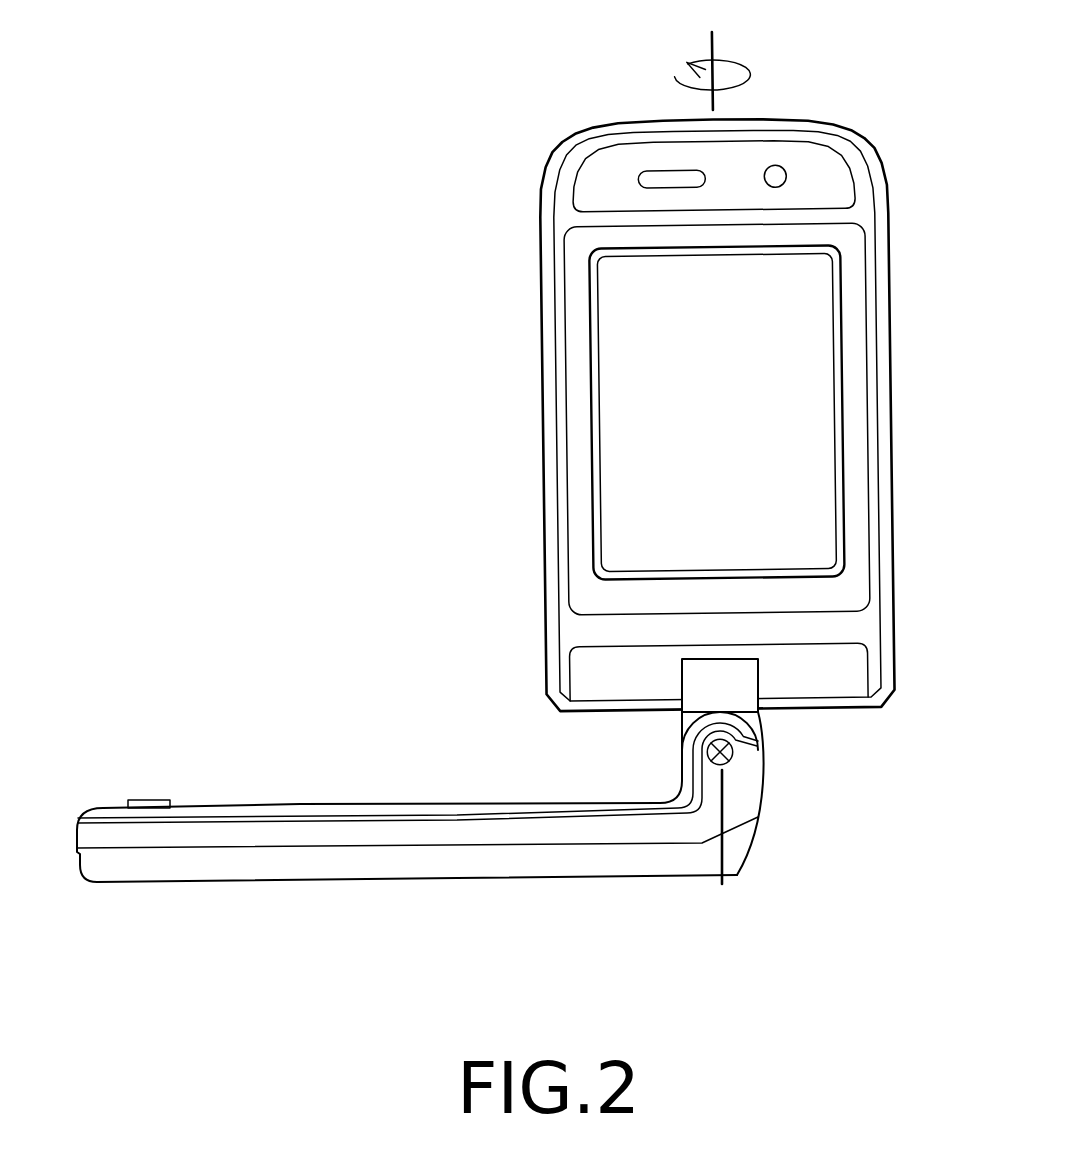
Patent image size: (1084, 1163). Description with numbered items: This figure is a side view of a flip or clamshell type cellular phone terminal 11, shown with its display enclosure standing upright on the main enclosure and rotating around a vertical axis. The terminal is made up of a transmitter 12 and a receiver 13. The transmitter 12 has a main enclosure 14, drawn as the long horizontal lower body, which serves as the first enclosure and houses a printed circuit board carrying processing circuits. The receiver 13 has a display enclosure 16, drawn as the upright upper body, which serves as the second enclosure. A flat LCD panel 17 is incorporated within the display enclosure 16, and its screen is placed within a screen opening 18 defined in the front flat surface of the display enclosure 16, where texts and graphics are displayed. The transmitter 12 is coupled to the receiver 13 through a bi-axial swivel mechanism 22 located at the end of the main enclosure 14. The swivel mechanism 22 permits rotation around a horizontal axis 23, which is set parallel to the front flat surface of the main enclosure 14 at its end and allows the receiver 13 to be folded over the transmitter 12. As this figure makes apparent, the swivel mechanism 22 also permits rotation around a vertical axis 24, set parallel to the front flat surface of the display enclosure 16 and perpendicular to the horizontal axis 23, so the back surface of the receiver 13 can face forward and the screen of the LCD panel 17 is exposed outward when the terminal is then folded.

The cellular phone terminal 11 is at (214, 725).
The transmitter 12 is at (632, 893).
The receiver 13 is at (842, 726).
The main enclosure 14 is at (737, 875).
The display enclosure 16 is at (718, 672).
The LCD panel 17 is at (716, 412).
The screen opening 18 is at (716, 412).
The bi-axial swivel mechanism 22 is at (660, 756).
The horizontal axis 23 is at (733, 757).
The vertical axis 24 is at (711, 38).